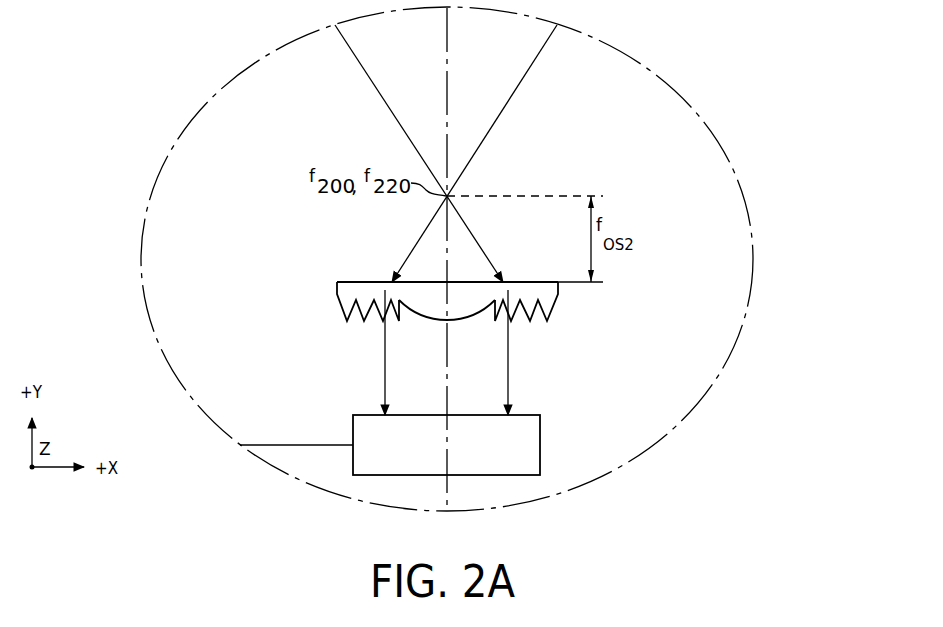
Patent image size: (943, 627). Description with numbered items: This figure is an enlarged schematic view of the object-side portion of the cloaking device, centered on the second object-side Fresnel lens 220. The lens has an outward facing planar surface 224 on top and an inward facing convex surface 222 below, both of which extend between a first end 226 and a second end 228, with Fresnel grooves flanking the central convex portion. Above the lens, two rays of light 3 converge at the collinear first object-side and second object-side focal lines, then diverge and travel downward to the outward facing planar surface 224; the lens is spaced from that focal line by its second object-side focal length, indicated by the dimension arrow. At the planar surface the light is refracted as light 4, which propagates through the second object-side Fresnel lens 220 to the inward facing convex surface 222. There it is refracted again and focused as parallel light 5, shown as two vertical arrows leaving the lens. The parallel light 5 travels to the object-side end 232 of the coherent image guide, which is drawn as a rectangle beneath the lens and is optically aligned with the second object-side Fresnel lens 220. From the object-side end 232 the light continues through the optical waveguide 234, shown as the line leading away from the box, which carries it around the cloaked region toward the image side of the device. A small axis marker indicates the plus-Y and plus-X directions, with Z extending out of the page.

The light 3 is at (367, 72).
The light 4 is at (388, 299).
The parallel light 5 is at (385, 362).
The second object-side Fresnel lens 220 is at (461, 306).
The inward facing convex surface 222 is at (450, 321).
The outward facing planar surface 224 is at (545, 282).
The first end 226 is at (558, 289).
The second end 228 is at (337, 290).
The object-side end 232 is at (540, 445).
The optical waveguide 234 is at (298, 445).